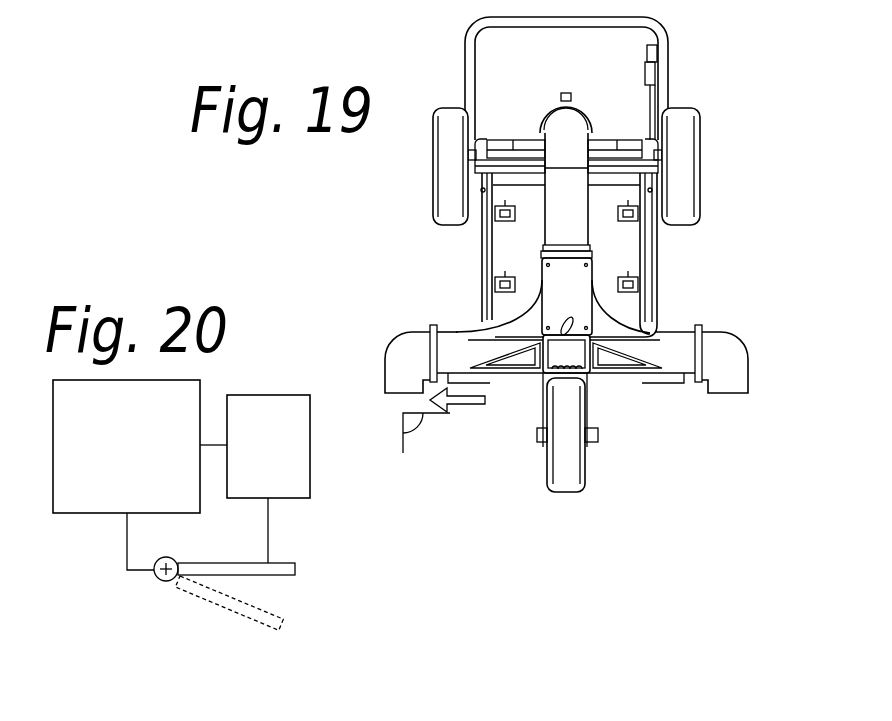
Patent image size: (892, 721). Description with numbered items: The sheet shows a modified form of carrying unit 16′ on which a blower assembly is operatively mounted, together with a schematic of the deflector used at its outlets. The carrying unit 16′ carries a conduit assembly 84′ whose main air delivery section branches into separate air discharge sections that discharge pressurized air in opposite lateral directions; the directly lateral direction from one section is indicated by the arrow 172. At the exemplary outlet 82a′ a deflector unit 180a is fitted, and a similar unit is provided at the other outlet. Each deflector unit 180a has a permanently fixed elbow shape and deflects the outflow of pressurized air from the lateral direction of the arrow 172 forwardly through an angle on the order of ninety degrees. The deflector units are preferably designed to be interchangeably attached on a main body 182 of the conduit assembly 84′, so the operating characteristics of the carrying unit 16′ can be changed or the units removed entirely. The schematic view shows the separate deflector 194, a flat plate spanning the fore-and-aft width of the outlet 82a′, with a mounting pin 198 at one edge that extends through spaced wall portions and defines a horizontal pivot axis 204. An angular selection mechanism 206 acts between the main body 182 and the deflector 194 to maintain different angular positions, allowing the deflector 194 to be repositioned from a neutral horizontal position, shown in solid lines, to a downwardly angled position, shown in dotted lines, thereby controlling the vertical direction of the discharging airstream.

In FIG. 19, the carrying unit 16′ is at (696, 293).
In FIG. 19, the conduit assembly 84′ is at (606, 267).
In FIG. 19, the main body 182 is at (666, 346).
In FIG. 20, the main body 182 is at (252, 487).
In FIG. 19, the deflector unit 180a is at (403, 366).
In FIG. 19, the outlet 82a′ is at (436, 333).
In FIG. 19, the arrow 172 is at (462, 406).
In FIG. 20, the angular selection mechanism 206 is at (110, 500).
In FIG. 20, the deflector 194 is at (264, 577).
In FIG. 20, the mounting pin 198 is at (166, 582).
In FIG. 20, the horizontal pivot axis 204 is at (158, 578).